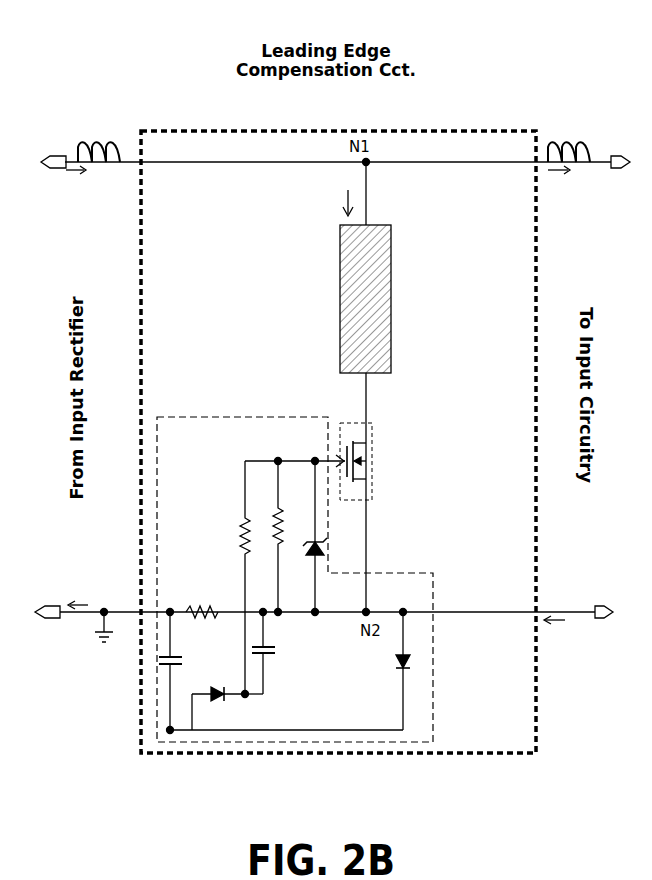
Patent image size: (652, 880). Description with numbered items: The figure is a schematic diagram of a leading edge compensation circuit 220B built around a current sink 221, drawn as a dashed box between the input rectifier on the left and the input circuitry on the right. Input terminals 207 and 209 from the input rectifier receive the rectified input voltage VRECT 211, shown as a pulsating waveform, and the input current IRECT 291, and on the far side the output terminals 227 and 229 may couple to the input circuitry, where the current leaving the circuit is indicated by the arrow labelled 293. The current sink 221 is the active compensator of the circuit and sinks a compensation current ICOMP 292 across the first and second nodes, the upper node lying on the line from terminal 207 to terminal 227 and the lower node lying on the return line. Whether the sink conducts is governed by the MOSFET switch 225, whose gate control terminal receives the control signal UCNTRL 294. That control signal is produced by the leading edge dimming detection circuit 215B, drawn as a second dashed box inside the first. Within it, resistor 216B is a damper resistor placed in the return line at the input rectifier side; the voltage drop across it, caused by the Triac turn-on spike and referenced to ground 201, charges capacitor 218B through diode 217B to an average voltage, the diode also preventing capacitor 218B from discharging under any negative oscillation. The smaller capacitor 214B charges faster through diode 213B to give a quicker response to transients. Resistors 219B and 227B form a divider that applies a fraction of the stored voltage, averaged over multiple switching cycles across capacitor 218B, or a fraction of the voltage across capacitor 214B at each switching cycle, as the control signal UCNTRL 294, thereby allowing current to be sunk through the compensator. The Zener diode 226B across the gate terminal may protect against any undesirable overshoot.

The ground 201 is at (96, 640).
The input terminal 207 is at (58, 188).
The input terminal 209 is at (66, 600).
The rectified input voltage VRECT 211 is at (598, 118).
The diode 213B is at (226, 706).
The capacitor 214B is at (272, 655).
The leading edge dimming detection circuit 215B is at (395, 572).
The resistor 216B is at (214, 592).
The diode 217B is at (412, 664).
The capacitor 218B is at (200, 668).
The resistor 219B is at (232, 537).
The leading edge compensation circuit 220B is at (298, 116).
The current sink 221 is at (340, 299).
The MOSFET switch 225 is at (373, 445).
The Zener diode 226B is at (318, 600).
The output terminal 227 is at (630, 190).
The resistor 227B is at (275, 500).
The output terminal 229 is at (596, 600).
The input current IRECT 291 is at (90, 184).
The compensation current ICOMP 292 is at (344, 206).
The output rectified current 293 is at (576, 180).
The control signal UCNTRL 294 is at (336, 460).